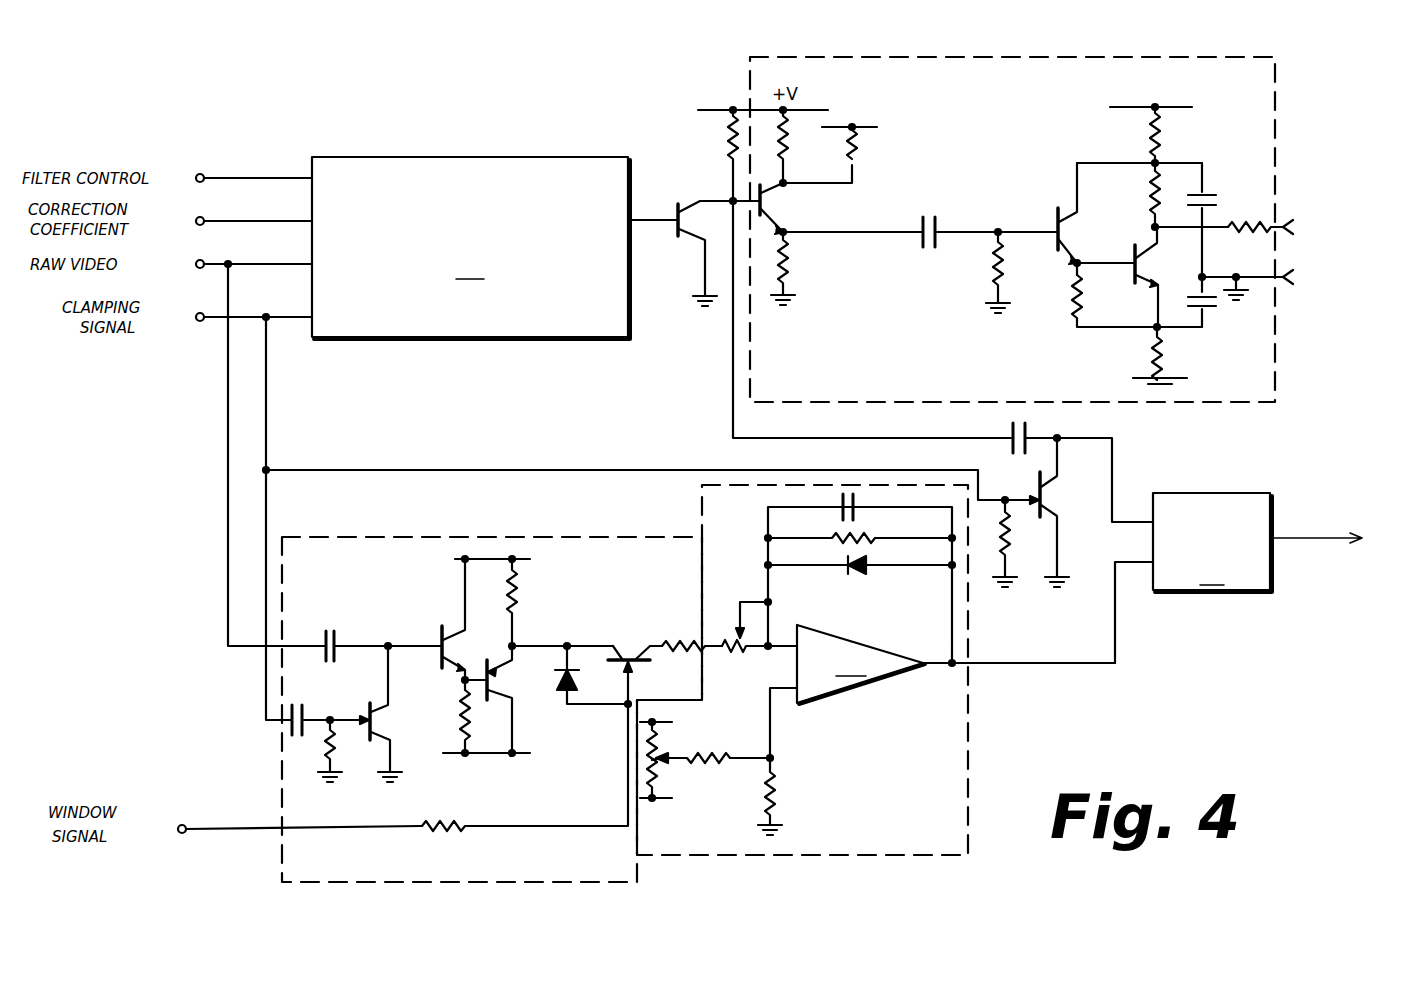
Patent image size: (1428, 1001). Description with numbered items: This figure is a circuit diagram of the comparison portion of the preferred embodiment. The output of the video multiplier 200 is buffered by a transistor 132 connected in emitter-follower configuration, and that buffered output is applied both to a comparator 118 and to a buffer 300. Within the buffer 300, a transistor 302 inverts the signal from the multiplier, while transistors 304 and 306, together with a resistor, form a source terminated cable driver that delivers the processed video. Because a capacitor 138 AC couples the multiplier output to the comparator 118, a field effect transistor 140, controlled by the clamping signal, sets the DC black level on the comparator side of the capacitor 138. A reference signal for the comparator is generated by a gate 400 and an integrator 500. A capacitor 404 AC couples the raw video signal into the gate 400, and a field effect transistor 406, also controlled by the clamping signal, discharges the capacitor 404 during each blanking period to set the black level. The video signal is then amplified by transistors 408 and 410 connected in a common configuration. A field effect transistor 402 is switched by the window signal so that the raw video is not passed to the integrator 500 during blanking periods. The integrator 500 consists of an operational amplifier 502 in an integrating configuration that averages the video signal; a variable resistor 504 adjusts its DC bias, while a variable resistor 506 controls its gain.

The comparator 118 is at (1157, 578).
The transistor 132 is at (677, 234).
The capacitor 138 is at (1022, 424).
The field effect transistor 140 is at (1052, 496).
The video multiplier 200 is at (471, 248).
The buffer 300 is at (1029, 60).
The transistor 302 is at (768, 206).
The transistor 304 is at (1066, 238).
The transistor 306 is at (1136, 277).
The gate 400 is at (393, 906).
The field effect transistor 402 is at (629, 646).
The capacitor 404 is at (348, 618).
The field effect transistor 406 is at (375, 727).
The transistor 408 is at (436, 628).
The transistor 410 is at (509, 699).
The integrator 500 is at (826, 856).
The operational amplifier 502 is at (941, 664).
The variable resistor 504 is at (662, 757).
The variable resistor 506 is at (730, 650).